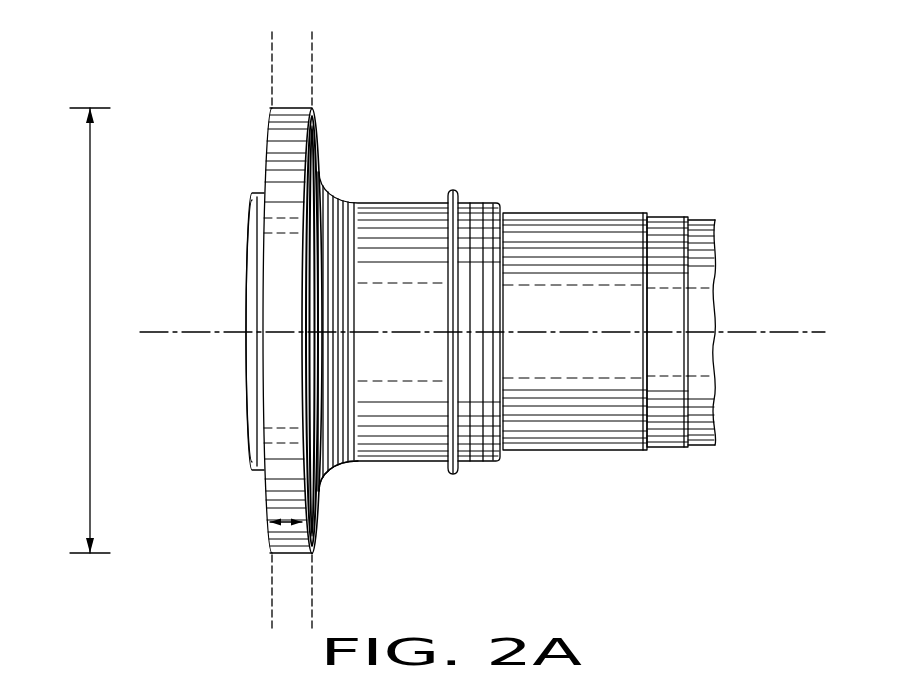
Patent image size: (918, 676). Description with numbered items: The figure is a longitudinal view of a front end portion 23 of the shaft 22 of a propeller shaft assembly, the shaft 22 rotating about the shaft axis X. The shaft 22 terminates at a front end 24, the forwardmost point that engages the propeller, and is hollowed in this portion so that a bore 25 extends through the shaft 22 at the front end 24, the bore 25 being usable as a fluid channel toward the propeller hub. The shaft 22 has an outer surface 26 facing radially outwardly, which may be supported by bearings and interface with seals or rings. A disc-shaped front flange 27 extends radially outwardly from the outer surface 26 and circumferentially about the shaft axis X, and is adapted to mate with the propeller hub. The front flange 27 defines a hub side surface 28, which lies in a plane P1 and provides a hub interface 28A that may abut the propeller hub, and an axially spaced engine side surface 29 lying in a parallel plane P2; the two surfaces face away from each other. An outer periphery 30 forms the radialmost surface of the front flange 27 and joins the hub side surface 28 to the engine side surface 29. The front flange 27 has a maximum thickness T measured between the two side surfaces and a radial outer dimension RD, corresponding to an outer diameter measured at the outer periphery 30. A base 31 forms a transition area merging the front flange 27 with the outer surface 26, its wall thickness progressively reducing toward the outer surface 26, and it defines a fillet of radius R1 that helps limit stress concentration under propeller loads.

The shaft 22 is at (760, 125).
The front end portion 23 is at (760, 185).
The front end 24 is at (238, 201).
The bore 25 is at (238, 389).
The outer surface 26 is at (577, 212).
The front flange 27 is at (318, 105).
The hub side surface 28 is at (276, 140).
The hub interface 28A is at (256, 158).
The engine side surface 29 is at (318, 135).
The outer periphery 30 is at (292, 108).
The base 31 is at (352, 188).
The plane P1 is at (270, 34).
The plane P2 is at (313, 35).
The radial outer dimension RD is at (88, 332).
The thickness T is at (284, 523).
The radius R1 is at (347, 469).
The shaft axis X is at (814, 330).